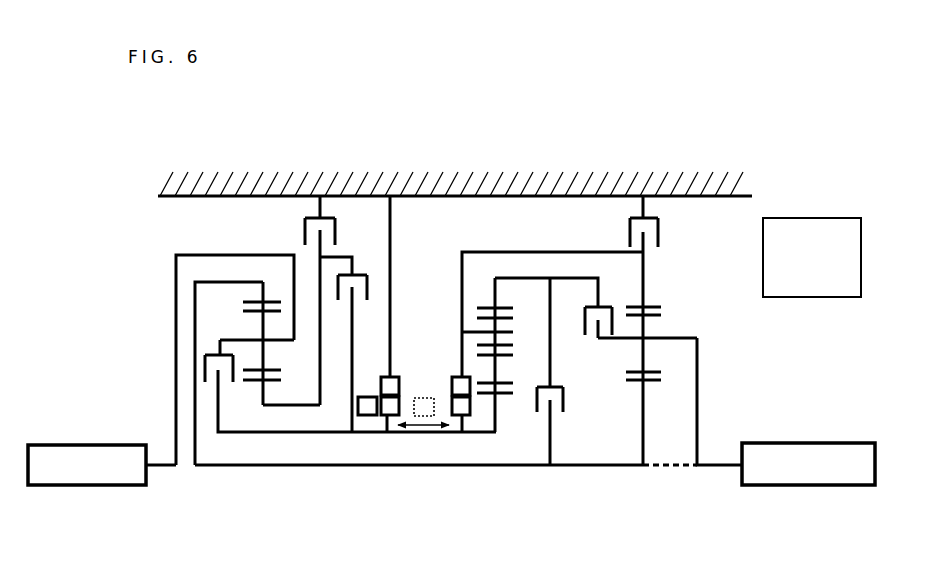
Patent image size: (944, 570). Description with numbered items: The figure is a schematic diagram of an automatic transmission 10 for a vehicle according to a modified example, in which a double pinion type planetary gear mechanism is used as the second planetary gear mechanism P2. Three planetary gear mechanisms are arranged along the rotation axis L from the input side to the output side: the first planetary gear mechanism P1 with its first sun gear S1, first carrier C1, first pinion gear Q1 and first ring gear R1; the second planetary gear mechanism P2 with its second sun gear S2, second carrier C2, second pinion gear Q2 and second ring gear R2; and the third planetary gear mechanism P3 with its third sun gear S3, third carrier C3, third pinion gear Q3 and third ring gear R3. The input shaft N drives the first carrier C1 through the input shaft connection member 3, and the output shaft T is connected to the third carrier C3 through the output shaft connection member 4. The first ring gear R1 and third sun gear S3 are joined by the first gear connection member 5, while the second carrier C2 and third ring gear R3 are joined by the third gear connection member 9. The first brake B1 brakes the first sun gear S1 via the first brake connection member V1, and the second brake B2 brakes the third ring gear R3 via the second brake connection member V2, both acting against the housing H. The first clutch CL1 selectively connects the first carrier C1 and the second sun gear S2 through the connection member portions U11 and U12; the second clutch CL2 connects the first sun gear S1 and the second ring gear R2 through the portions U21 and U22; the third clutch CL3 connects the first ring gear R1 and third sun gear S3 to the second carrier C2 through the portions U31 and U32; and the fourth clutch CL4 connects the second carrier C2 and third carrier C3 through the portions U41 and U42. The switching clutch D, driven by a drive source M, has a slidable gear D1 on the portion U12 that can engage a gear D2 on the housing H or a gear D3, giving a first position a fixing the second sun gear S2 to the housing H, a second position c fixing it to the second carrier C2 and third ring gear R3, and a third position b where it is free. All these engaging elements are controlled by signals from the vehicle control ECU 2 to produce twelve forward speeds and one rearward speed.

The automatic transmission 10 is at (567, 159).
The housing H is at (392, 193).
The first brake B1 is at (302, 219).
The first brake connection member V1 is at (322, 303).
The first portion of second-clutch connection member U21 is at (344, 257).
The second clutch CL2 is at (330, 268).
The second portion of second-clutch connection member U22 is at (348, 388).
The input shaft connection member 3 is at (175, 300).
The first gear connection member 5 is at (220, 470).
The first planetary gear mechanism P1 is at (274, 420).
The first ring gear R1 is at (262, 302).
The first carrier C1 is at (262, 340).
The first portion of first-clutch connection member U11 is at (220, 340).
The first clutch CL1 is at (207, 390).
The second portion of first-clutch connection member U12 is at (218, 432).
The first pinion gear Q1 is at (267, 374).
The first sun gear S1 is at (267, 392).
The drive source M is at (364, 420).
The gear D1 is at (385, 433).
The gear D2 is at (399, 381).
The gear D3 is at (453, 385).
The switching clutch D is at (421, 450).
The first position a is at (402, 422).
The third position b is at (440, 420).
The second position c is at (465, 420).
The third gear connection member 9 is at (582, 251).
The first portion of fourth-clutch connection member U41 is at (572, 277).
The second planetary gear mechanism P2 is at (512, 421).
The second carrier C2 is at (473, 331).
The second ring gear R2 is at (500, 308).
The second pinion gear Q2 is at (497, 355).
The second sun gear S2 is at (498, 433).
The first portion of third-clutch connection member U31 is at (551, 328).
The third clutch CL3 is at (598, 427).
The second portion of third-clutch connection member U32 is at (552, 447).
The fourth clutch CL4 is at (616, 303).
The second portion of fourth-clutch connection member U42 is at (601, 340).
The third carrier C3 is at (648, 337).
The output shaft connection member 4 is at (700, 445).
The second brake B2 is at (664, 232).
The second brake connection member V2 is at (646, 236).
The third planetary gear mechanism P3 is at (677, 392).
The third ring gear R3 is at (653, 306).
The third pinion gear Q3 is at (645, 363).
The third sun gear S3 is at (646, 390).
The vehicle control ECU 2 is at (797, 218).
The input shaft N is at (96, 486).
The rotation axis L is at (184, 470).
The output shaft T is at (818, 487).